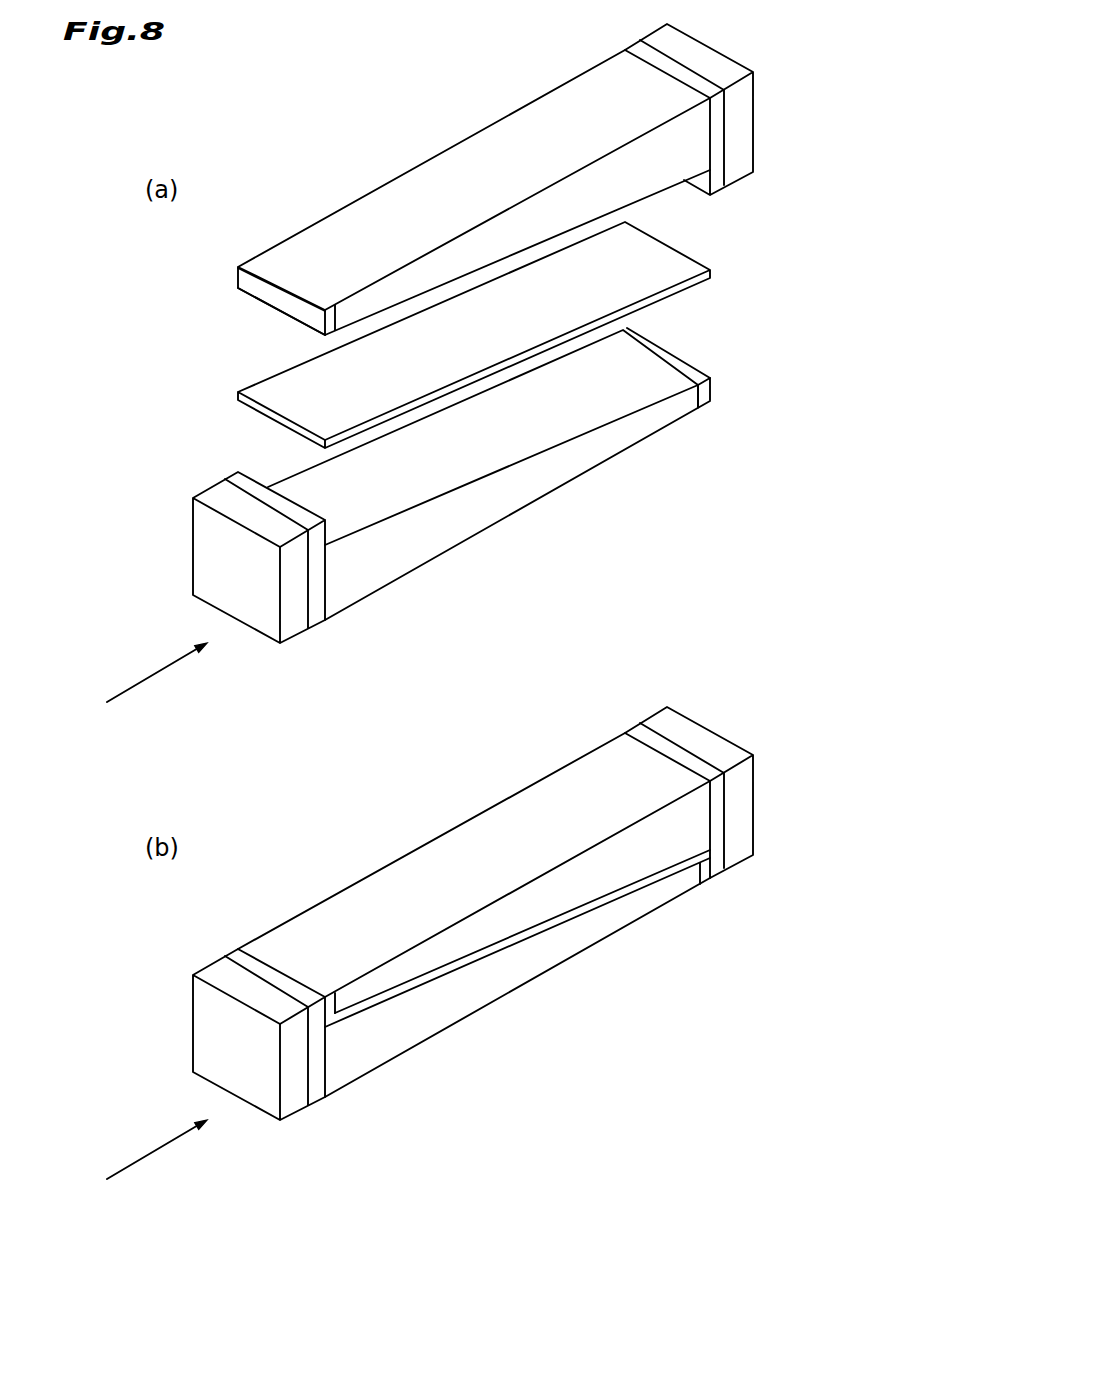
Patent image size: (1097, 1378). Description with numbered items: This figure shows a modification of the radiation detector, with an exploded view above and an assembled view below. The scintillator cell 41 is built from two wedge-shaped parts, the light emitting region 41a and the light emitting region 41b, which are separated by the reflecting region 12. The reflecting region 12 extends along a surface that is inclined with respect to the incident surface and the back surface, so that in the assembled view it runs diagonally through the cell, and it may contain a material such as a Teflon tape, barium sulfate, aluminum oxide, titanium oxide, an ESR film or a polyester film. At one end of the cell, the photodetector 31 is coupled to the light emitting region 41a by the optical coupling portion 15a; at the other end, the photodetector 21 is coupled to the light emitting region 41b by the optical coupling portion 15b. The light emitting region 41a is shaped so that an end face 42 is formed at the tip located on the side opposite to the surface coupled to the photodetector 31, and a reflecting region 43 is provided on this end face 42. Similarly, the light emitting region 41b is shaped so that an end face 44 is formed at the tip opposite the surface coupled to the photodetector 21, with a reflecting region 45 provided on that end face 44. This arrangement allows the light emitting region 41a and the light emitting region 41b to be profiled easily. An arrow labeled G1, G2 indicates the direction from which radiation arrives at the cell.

The reflecting region 12 is at (712, 273).
The optical coupling portion 15a is at (713, 195).
The optical coupling portion 15b is at (317, 625).
The photodetector 21 is at (248, 628).
The photodetector 31 is at (755, 148).
The scintillator cell 41 is at (508, 771).
The light emitting region 41a is at (487, 148).
The light emitting region 41b is at (497, 522).
The end face 42 is at (315, 325).
The reflecting region 43 is at (270, 297).
The end face 44 is at (712, 392).
The reflecting region 45 is at (712, 386).
The light beam G1 is at (167, 925).
The light beam G2 is at (147, 679).